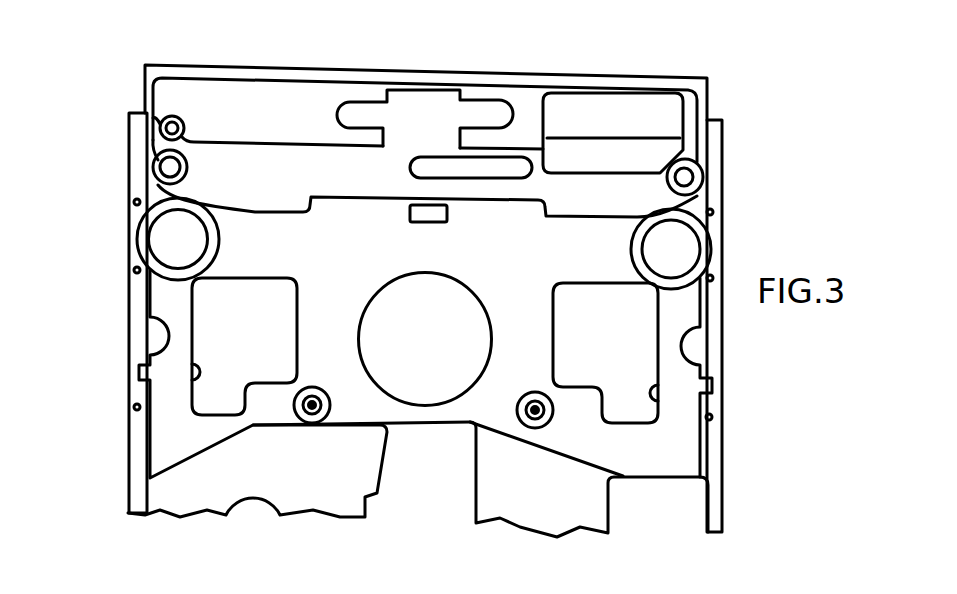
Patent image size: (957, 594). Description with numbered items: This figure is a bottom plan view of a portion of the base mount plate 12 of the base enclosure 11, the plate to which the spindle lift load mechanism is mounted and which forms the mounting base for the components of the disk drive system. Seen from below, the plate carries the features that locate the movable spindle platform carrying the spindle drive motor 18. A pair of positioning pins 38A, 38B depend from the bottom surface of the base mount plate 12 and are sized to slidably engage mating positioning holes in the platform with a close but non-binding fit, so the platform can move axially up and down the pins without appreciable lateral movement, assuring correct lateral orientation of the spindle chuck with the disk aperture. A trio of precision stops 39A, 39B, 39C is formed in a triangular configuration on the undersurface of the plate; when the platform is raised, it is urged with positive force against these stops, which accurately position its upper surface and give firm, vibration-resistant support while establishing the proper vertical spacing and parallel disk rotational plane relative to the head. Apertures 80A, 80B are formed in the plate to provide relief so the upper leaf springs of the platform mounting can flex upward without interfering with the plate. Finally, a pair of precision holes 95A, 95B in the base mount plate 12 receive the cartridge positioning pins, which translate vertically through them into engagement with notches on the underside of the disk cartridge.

The base enclosure 11 is at (96, 264).
The base mount plate 12 is at (128, 297).
The spindle drive motor 18 is at (512, 163).
The positioning pin 38A is at (312, 412).
The positioning pin 38B is at (534, 414).
The precision stop 39A is at (447, 213).
The precision stop 39B is at (323, 393).
The precision stop 39C is at (522, 395).
The aperture 80A is at (192, 378).
The aperture 80B is at (658, 404).
The precision hole 95A is at (162, 160).
The precision hole 95B is at (693, 174).